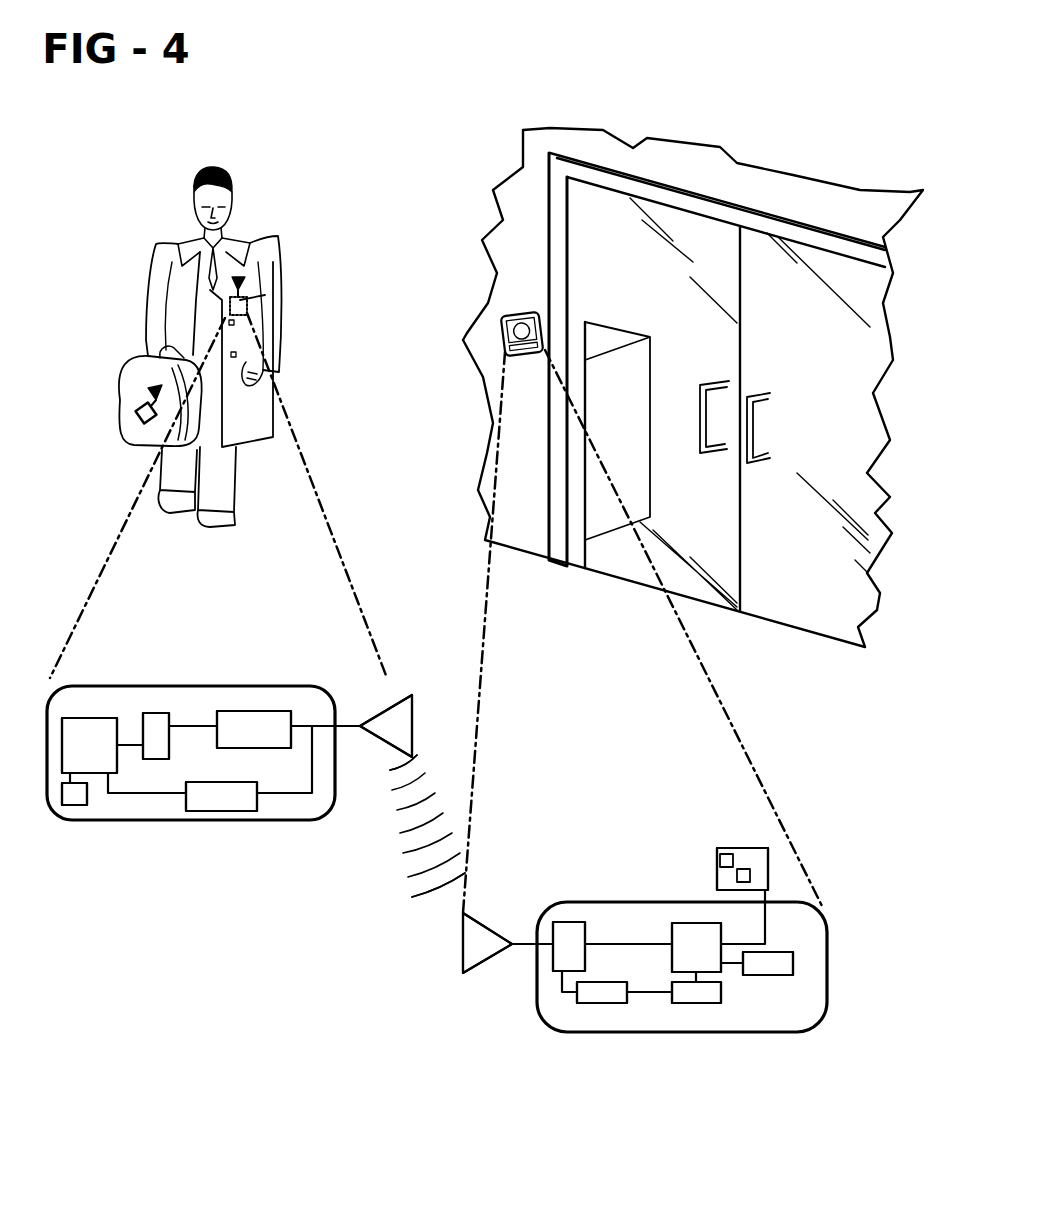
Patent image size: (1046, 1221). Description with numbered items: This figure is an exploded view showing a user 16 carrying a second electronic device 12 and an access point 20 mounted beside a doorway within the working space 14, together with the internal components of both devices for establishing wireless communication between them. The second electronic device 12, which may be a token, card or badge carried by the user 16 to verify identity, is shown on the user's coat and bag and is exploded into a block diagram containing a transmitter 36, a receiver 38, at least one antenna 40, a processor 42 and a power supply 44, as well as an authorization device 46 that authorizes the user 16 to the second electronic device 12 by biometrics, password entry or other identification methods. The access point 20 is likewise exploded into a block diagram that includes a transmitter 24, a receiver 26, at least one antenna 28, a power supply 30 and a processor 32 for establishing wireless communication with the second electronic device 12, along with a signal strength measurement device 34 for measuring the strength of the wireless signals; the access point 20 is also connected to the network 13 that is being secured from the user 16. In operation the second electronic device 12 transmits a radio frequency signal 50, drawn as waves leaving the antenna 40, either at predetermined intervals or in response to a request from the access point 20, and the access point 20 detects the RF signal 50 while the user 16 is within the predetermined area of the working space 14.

The second electronic device 12 is at (247, 300).
The network 13 is at (742, 869).
The working space 14 is at (718, 137).
The user 16 is at (252, 228).
The access point 20 is at (504, 309).
The transmitter 24 is at (569, 946).
The receiver 26 is at (602, 992).
The antenna 28 is at (487, 943).
The power supply 30 is at (768, 963).
The processor 32 is at (696, 947).
The signal strength measurement device 34 is at (696, 992).
The transmitter 36 is at (254, 729).
The receiver 38 is at (221, 796).
The antenna 40 is at (386, 726).
The processor 42 is at (89, 745).
The power supply 44 is at (74, 794).
The authorization device 46 is at (156, 736).
The radio frequency signal 50 is at (427, 826).